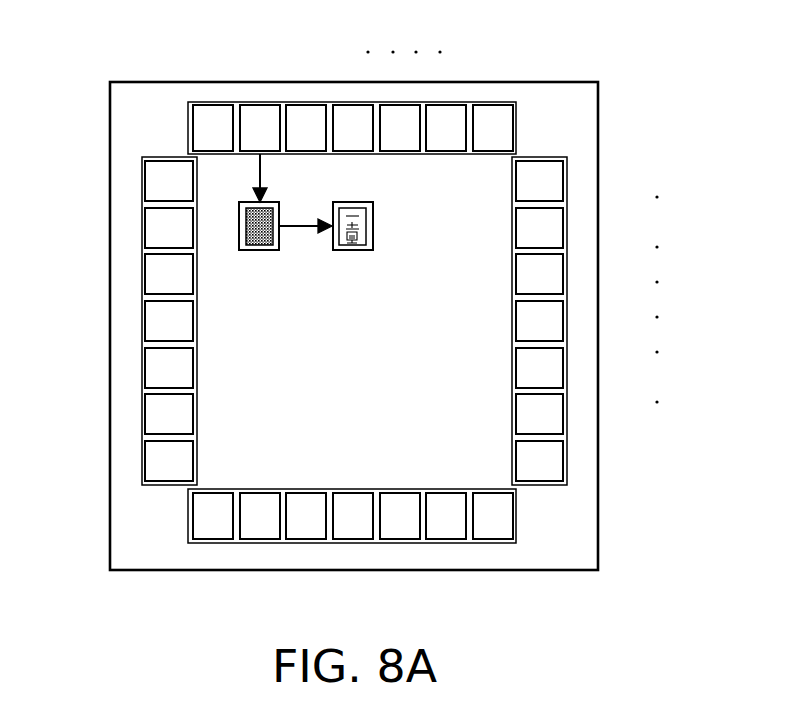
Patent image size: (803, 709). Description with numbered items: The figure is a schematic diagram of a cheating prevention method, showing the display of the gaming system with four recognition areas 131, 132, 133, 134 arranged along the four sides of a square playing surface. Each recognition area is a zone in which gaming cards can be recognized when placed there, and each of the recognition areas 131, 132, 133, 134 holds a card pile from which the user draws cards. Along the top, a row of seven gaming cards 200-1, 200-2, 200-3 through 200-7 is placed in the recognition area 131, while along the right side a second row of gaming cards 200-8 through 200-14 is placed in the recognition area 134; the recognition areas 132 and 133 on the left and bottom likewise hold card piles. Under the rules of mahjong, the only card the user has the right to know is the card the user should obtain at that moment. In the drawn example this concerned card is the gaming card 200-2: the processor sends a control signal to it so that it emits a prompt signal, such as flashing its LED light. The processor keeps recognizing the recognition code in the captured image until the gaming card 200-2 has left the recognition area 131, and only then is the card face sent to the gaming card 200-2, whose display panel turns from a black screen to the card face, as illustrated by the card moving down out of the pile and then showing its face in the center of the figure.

The recognition area 131 is at (188, 123).
The recognition area 132 is at (142, 251).
The recognition area 133 is at (234, 543).
The recognition area 134 is at (540, 486).
The gaming card 200-1 is at (213, 115).
The gaming card 200-2 is at (258, 122).
The gaming card 200-3 is at (316, 115).
The gaming card 200-7 is at (494, 113).
The gaming card 200-8 is at (550, 178).
The gaming card 200-14 is at (548, 461).